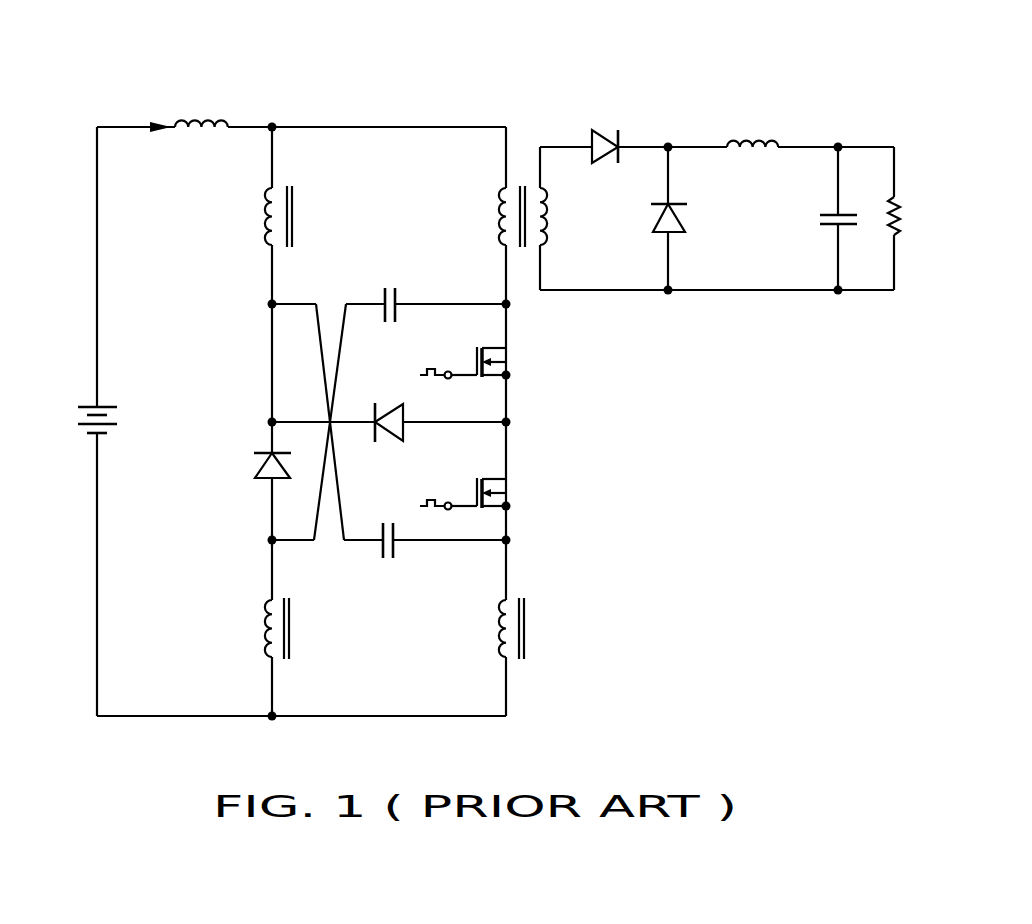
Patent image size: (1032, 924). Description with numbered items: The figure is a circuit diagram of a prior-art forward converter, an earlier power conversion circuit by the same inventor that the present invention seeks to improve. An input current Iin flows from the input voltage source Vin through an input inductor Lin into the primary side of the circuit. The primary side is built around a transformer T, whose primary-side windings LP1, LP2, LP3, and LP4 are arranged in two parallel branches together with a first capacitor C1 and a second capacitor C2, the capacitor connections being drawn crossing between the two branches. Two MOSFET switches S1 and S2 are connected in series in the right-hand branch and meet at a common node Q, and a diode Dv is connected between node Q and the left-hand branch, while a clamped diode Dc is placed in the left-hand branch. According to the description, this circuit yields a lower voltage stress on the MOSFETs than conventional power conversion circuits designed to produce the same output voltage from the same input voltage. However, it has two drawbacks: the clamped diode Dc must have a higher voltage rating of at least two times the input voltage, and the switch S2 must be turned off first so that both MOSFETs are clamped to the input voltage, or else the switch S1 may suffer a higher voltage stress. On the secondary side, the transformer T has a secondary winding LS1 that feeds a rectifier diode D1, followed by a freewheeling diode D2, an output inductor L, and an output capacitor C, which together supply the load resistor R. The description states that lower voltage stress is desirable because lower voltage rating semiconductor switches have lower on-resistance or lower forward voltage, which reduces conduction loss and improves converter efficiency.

The input current Iin is at (143, 106).
The input inductor Lin is at (201, 104).
The input voltage source Vin is at (71, 416).
The fourth primary winding LP4 is at (249, 216).
The third primary winding LP3 is at (244, 628).
The second primary winding LP2 is at (485, 628).
The first primary winding LP1 is at (478, 216).
The secondary winding LS1 is at (571, 216).
The transformer T is at (526, 155).
The first capacitor C1 is at (426, 285).
The second capacitor C2 is at (425, 559).
The switch S1 is at (463, 357).
The switch S2 is at (463, 488).
The node Q is at (521, 426).
The voltage clamp diode Dv is at (384, 440).
The clamped diode Dc is at (248, 466).
The first rectifier diode D1 is at (606, 126).
The second rectifier diode D2 is at (692, 218).
The output inductor L is at (752, 124).
The output capacitor C is at (826, 218).
The load resistor R is at (908, 218).